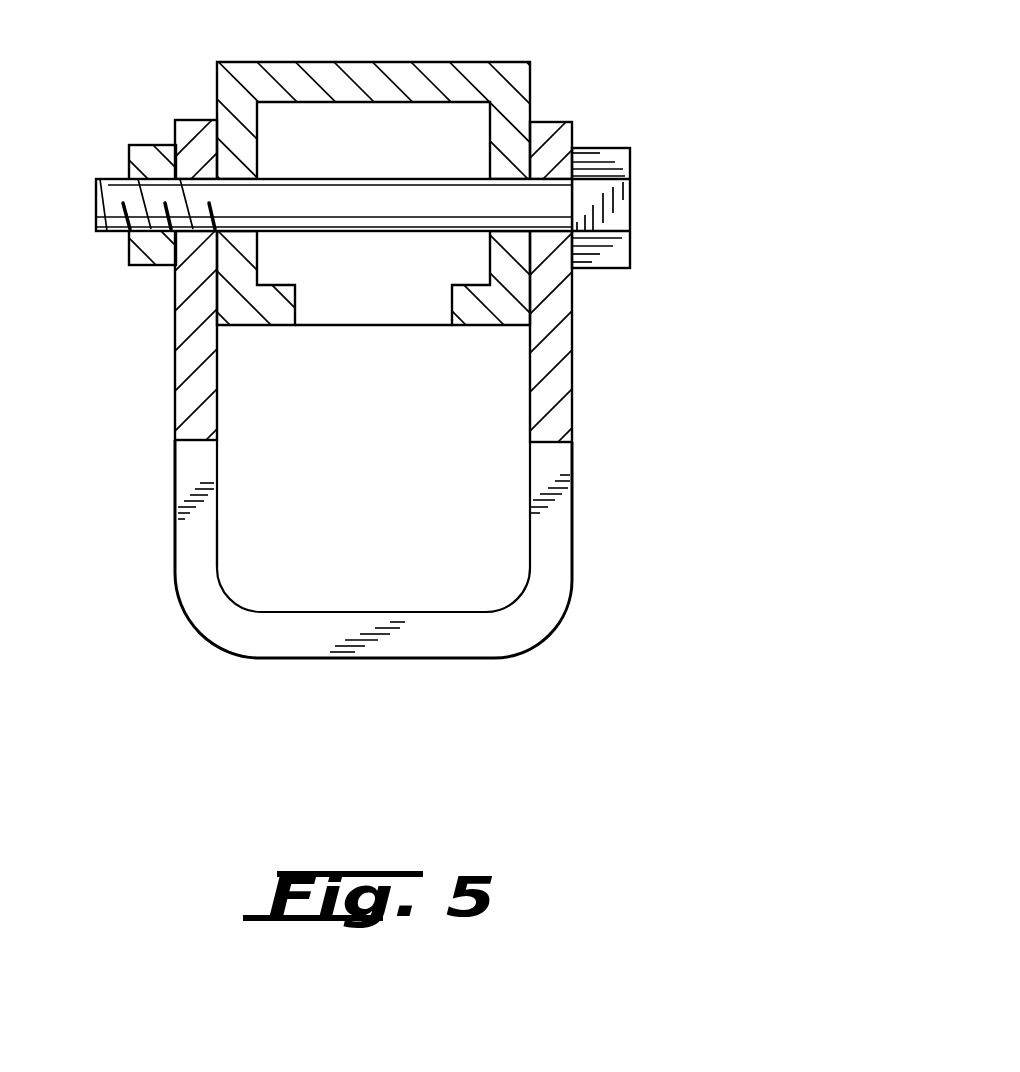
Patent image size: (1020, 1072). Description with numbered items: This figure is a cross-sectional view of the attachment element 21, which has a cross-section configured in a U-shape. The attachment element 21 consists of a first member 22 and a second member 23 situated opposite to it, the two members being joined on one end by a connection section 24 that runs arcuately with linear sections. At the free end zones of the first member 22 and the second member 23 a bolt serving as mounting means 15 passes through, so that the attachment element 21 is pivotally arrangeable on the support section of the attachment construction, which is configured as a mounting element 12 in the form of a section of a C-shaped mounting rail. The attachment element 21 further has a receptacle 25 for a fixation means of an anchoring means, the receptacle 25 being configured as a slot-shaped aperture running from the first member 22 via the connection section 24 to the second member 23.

The mounting element 12 is at (530, 82).
The mounting means 15 is at (372, 231).
The attachment element 21 is at (716, 450).
The first member 22 is at (563, 316).
The second member 23 is at (178, 338).
The connection section 24 is at (197, 477).
The receptacle 25 is at (200, 546).